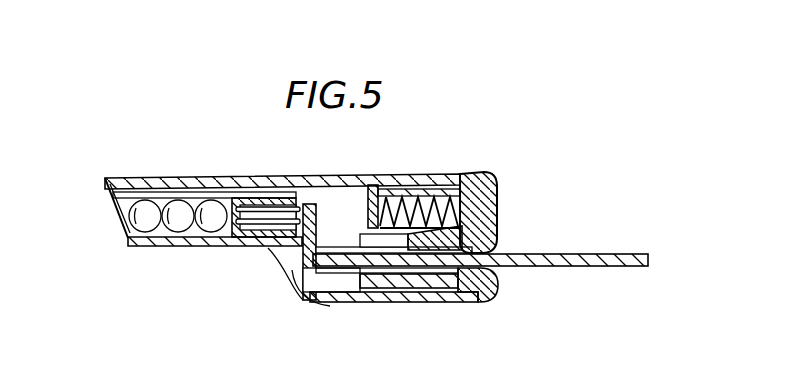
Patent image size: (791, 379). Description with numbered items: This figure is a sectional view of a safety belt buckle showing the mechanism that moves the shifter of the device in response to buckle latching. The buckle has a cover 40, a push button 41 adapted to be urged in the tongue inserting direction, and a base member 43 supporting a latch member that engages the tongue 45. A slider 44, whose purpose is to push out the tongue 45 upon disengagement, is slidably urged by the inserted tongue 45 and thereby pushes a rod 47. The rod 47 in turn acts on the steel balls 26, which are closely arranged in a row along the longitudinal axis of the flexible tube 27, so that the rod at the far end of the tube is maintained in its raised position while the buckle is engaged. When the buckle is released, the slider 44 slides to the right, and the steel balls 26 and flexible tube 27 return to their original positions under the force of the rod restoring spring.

The steel balls 26 is at (150, 236).
The flexible tube 27 is at (178, 238).
The rod 47 is at (270, 196).
The cover 40 is at (376, 190).
The push button 41 is at (497, 208).
The slider 44 is at (306, 292).
The base member 43 is at (398, 303).
The tongue 45 is at (478, 303).